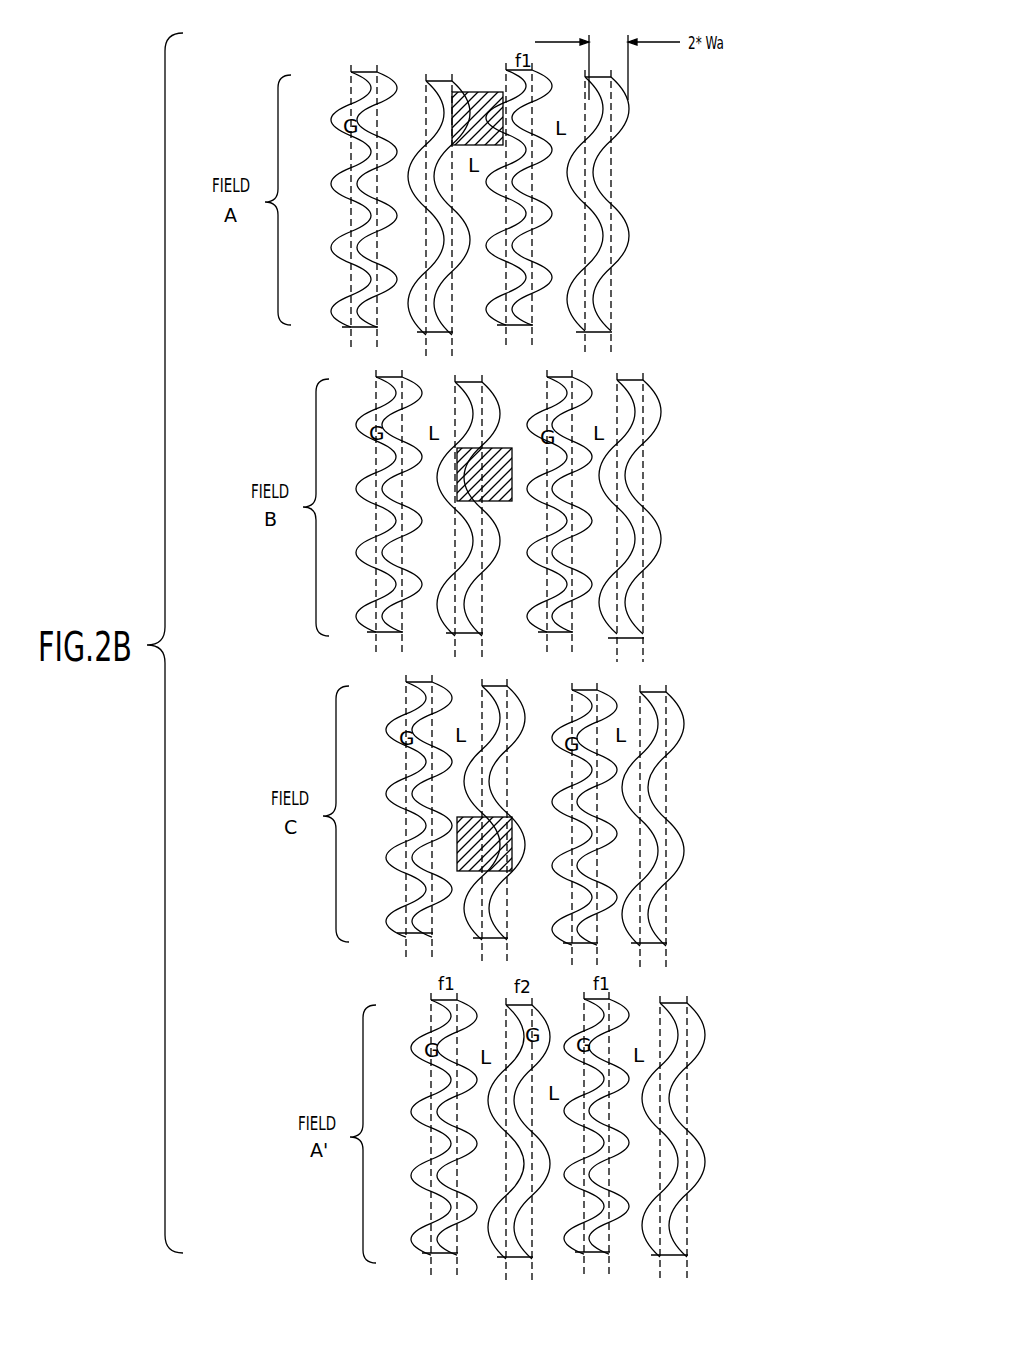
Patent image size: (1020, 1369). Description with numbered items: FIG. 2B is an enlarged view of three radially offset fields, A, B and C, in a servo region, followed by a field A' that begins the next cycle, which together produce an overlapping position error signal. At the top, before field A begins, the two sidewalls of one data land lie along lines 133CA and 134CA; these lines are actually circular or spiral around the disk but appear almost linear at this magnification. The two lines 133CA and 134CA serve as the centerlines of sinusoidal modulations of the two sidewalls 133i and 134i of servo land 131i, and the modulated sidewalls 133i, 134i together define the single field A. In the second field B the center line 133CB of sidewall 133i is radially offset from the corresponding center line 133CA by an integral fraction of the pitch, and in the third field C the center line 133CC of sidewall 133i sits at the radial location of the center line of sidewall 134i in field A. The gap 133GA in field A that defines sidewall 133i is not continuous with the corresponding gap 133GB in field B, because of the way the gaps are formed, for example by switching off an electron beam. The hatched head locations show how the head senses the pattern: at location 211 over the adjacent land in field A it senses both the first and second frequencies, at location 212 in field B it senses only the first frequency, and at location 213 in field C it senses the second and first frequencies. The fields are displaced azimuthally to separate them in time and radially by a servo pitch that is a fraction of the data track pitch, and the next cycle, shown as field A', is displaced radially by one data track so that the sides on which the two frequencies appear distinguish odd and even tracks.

The center line of sidewall in field A 133CA is at (363, 74).
The sidewall 133i is at (380, 88).
The center line of sidewall in field A 134CA is at (424, 80).
The sidewall 134i is at (438, 79).
The head location in field A 211 is at (493, 91).
The servo land 131i is at (417, 137).
The gap in first field A 133GA is at (341, 319).
The center line of sidewall in field B 133CB is at (401, 427).
The gap in second field B 133GB is at (413, 395).
The head location in field B 212 is at (503, 448).
The center line of sidewall in field C 133CC is at (432, 732).
The head location in field C 213 is at (508, 816).